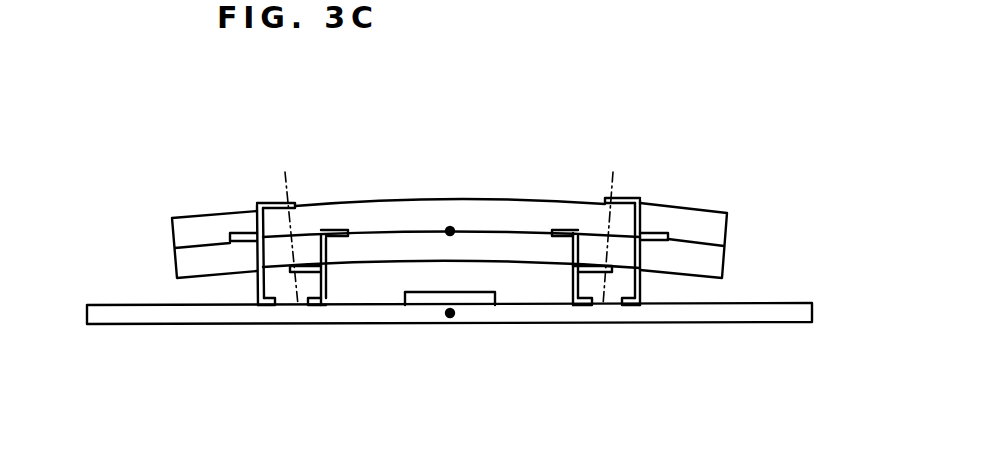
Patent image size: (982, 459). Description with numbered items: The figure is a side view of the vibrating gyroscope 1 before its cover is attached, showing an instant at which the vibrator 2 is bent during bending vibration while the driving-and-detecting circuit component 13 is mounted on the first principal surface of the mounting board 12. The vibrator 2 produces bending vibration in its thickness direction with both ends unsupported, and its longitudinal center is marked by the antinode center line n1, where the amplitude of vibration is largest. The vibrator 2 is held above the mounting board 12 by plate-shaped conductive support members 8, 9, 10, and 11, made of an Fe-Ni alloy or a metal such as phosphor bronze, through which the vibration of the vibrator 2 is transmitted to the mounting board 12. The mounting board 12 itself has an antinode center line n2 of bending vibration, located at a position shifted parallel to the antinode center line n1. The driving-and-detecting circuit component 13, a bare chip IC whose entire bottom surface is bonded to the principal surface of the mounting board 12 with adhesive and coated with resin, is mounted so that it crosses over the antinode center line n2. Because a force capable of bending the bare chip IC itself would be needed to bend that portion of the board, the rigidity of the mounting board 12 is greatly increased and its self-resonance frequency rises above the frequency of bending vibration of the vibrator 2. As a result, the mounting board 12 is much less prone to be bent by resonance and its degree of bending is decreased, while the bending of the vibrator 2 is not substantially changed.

The vibrating gyroscope 1 is at (150, 153).
The vibrator 2 is at (708, 213).
The conductive support member 8 is at (275, 203).
The conductive support member 9 is at (624, 198).
The conductive support member 10 is at (334, 227).
The conductive support member 11 is at (565, 227).
The mounting board 12 is at (777, 303).
The driving-and-detecting circuit component 13 is at (473, 300).
The antinode center line n1 is at (450, 231).
The antinode center line n2 is at (450, 313).